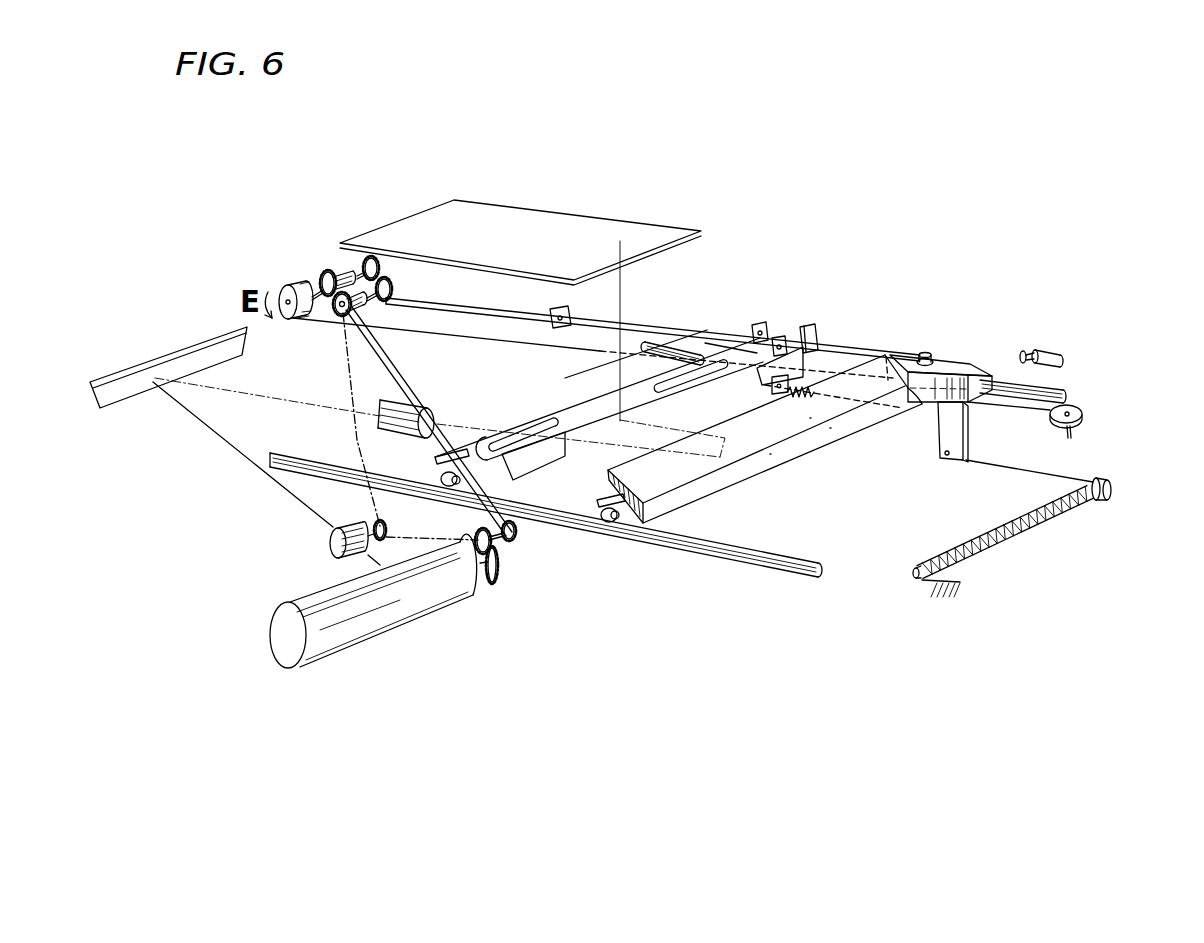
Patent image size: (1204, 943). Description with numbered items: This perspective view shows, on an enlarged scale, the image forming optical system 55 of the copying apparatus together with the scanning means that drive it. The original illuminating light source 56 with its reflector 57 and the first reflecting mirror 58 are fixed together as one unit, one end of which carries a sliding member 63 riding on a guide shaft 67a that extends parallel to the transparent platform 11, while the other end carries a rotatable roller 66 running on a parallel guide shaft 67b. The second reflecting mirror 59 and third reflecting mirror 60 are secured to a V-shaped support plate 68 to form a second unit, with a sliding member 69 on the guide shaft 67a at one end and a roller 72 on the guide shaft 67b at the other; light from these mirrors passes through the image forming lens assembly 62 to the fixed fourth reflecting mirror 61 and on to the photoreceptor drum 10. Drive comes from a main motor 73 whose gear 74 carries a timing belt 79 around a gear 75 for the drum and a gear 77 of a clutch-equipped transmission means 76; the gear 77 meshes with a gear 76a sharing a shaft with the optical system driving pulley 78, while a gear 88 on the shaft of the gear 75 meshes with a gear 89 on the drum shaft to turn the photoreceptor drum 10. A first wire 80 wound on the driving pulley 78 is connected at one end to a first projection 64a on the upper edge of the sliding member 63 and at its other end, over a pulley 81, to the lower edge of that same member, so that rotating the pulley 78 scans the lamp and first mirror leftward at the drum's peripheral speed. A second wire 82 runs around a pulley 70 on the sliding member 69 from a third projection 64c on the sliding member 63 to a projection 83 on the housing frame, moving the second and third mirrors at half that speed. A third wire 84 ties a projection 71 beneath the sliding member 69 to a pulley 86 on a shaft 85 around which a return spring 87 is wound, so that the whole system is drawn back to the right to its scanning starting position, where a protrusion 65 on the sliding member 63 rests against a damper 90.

The photoreceptor drum 10 is at (385, 628).
The transparent platform 11 is at (600, 218).
The optical system 55 is at (753, 482).
The original illuminating light source 56 is at (540, 422).
The reflector 57 is at (597, 397).
The first reflecting mirror 58 is at (546, 454).
The second reflecting mirror 59 is at (830, 428).
The third reflecting mirror 60 is at (810, 418).
The fourth reflecting mirror 61 is at (165, 363).
The image forming lens assembly 62 is at (407, 401).
The sliding member 63 is at (857, 348).
The first projection 64a is at (761, 324).
The third projection 64c is at (781, 337).
The protrusion 65 is at (810, 327).
The rotatable roller 66 is at (447, 490).
The guide shaft 67a is at (664, 342).
The guide shaft 67b is at (702, 558).
The support plate 68 is at (771, 454).
The sliding member 69 is at (982, 382).
The pulley 70 is at (933, 363).
The projection 71 is at (955, 428).
The roller 72 is at (612, 524).
The main motor 73 is at (330, 547).
The gear 74 is at (380, 522).
The gear 75 is at (517, 532).
The transmission means 76 is at (337, 260).
The gear 76a is at (324, 273).
The gear 77 is at (337, 306).
The optical system driving pulley 78 is at (283, 290).
The timing belt 79 is at (348, 369).
The first wire 80 is at (470, 304).
The pulley 81 is at (1083, 412).
The second wire 82 is at (918, 352).
The projection 83 is at (569, 311).
The third wire 84 is at (1013, 467).
The shaft 85 is at (916, 578).
The pulley 86 is at (1112, 488).
The return spring 87 is at (1025, 525).
The gear 88 is at (500, 548).
The gear 89 is at (493, 578).
The damper 90 is at (1052, 352).